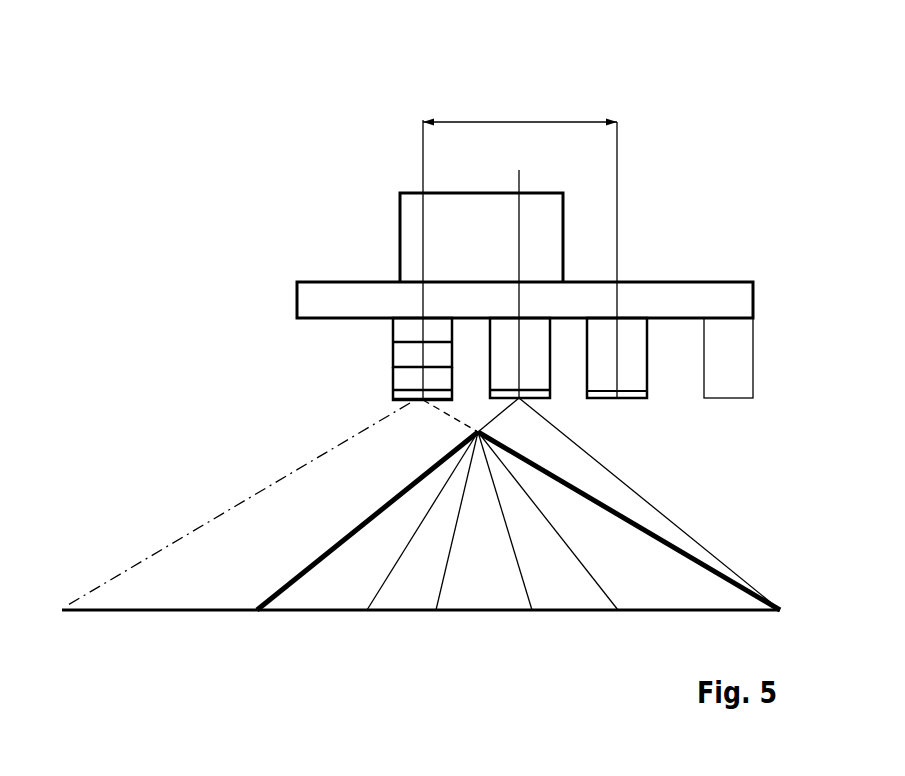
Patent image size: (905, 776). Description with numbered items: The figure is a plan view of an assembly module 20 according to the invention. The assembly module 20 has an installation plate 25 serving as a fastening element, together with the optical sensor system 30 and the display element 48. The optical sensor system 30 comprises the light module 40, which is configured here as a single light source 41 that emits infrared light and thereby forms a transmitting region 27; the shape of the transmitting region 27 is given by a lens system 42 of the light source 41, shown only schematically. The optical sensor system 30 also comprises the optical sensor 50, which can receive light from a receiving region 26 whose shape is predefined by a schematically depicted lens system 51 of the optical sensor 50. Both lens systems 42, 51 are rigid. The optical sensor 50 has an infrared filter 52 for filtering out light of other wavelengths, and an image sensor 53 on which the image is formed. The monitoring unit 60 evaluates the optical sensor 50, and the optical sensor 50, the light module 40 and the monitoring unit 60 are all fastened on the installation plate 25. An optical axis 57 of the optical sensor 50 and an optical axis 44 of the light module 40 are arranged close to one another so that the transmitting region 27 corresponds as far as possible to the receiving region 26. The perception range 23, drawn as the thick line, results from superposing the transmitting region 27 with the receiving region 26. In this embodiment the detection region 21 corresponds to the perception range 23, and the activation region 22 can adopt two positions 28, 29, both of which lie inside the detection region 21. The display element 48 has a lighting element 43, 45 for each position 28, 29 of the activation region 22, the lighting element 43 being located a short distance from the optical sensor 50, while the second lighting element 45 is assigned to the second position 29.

The assembly module 20 is at (655, 149).
The detection region 21 is at (367, 573).
The activation region 22 is at (420, 592).
The perception range 23 is at (422, 521).
The installation plate 25 is at (658, 281).
The receiving region 26 is at (173, 578).
The transmitting region 27 is at (619, 500).
The first position of the activation region 28 is at (505, 521).
The second position of the activation region 29 is at (562, 597).
The optical sensor system 30 is at (145, 141).
The light module 40 is at (342, 338).
The light source 41 is at (498, 415).
The lens system 42 is at (375, 304).
The lighting element 43 is at (640, 380).
The optical axis 44 is at (521, 224).
The second lighting element 45 is at (744, 372).
The display element 48 is at (755, 404).
The optical sensor 50 is at (205, 346).
The lens system 51 is at (330, 383).
The infrared filter 52 is at (393, 380).
The image sensor 53 is at (330, 353).
The optical axis 57 is at (420, 150).
The monitoring unit 60 is at (406, 208).